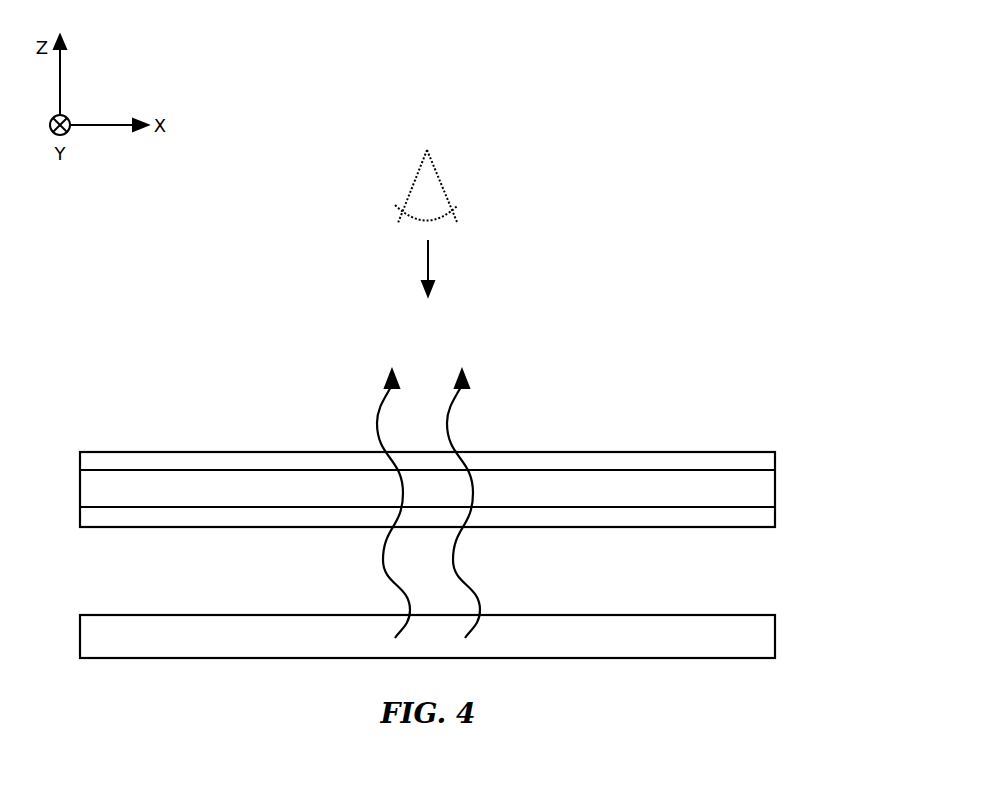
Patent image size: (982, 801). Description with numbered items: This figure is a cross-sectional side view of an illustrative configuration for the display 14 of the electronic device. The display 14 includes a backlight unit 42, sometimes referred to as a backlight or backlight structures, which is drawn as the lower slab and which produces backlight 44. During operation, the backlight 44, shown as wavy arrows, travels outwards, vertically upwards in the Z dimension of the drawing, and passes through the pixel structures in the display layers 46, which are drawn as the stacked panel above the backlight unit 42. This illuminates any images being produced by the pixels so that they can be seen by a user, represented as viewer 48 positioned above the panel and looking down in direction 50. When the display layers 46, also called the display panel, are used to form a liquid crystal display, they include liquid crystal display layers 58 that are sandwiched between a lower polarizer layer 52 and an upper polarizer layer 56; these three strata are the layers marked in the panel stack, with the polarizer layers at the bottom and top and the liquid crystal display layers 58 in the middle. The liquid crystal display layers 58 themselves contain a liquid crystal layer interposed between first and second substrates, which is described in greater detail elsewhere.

The display 14 is at (785, 343).
The backlight unit 42 is at (789, 633).
The backlight 44 is at (379, 420).
The display layers 46 is at (783, 452).
The viewer 48 is at (437, 178).
The direction 50 is at (428, 262).
The lower polarizer layer 52 is at (84, 517).
The upper polarizer layer 56 is at (84, 463).
The liquid crystal display layers 58 is at (84, 490).